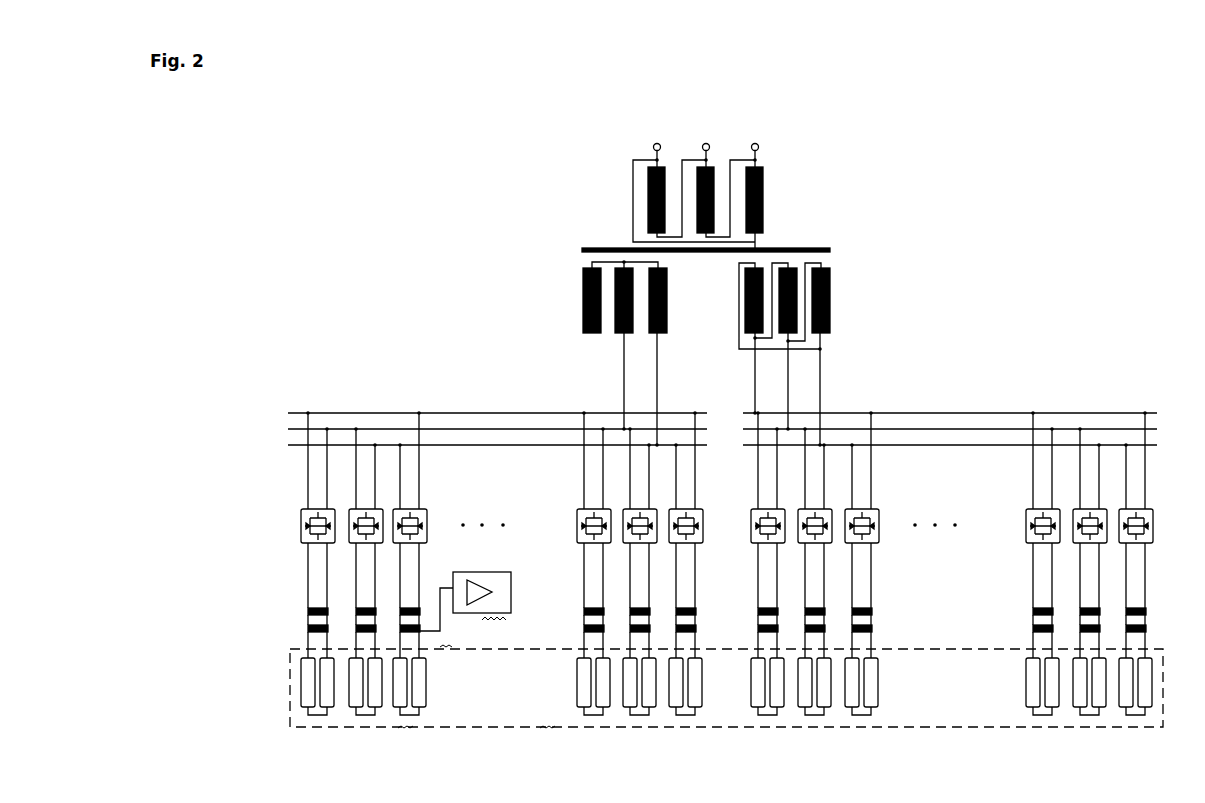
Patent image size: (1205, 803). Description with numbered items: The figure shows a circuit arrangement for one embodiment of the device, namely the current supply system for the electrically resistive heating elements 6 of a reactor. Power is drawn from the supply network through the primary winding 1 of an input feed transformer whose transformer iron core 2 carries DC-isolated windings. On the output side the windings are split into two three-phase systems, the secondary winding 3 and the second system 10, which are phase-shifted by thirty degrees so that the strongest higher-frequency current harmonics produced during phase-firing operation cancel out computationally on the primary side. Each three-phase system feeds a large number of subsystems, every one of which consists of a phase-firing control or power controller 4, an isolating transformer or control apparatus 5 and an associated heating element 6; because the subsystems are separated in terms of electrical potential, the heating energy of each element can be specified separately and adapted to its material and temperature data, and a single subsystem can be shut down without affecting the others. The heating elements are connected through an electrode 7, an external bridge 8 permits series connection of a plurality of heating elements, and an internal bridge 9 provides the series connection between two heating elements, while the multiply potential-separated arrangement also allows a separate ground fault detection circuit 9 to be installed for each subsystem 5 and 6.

The supply network/primary winding 1 is at (765, 208).
The transformer iron core with DC-isolated windings 2 is at (830, 250).
The secondary winding 3 is at (832, 300).
The phase-firing control 4 is at (878, 511).
The control apparatus 5 is at (872, 622).
The electrically resistive heating elements 6 is at (877, 695).
The electrode for connection to the heating elements 7 is at (945, 650).
The external bridge for series connection of a plurality of heating elements 8 is at (472, 515).
The internal bridge for series connection between two heating elements 9 is at (498, 570).
The vessel wall 10 is at (668, 316).